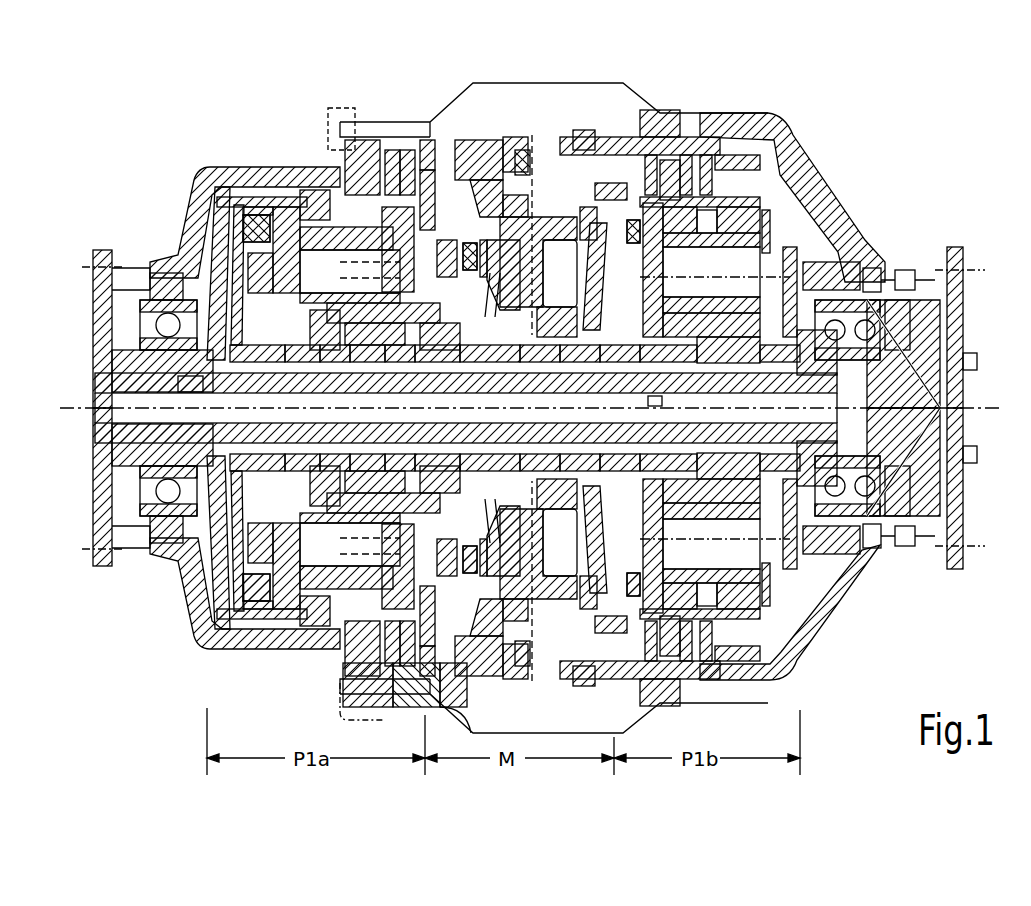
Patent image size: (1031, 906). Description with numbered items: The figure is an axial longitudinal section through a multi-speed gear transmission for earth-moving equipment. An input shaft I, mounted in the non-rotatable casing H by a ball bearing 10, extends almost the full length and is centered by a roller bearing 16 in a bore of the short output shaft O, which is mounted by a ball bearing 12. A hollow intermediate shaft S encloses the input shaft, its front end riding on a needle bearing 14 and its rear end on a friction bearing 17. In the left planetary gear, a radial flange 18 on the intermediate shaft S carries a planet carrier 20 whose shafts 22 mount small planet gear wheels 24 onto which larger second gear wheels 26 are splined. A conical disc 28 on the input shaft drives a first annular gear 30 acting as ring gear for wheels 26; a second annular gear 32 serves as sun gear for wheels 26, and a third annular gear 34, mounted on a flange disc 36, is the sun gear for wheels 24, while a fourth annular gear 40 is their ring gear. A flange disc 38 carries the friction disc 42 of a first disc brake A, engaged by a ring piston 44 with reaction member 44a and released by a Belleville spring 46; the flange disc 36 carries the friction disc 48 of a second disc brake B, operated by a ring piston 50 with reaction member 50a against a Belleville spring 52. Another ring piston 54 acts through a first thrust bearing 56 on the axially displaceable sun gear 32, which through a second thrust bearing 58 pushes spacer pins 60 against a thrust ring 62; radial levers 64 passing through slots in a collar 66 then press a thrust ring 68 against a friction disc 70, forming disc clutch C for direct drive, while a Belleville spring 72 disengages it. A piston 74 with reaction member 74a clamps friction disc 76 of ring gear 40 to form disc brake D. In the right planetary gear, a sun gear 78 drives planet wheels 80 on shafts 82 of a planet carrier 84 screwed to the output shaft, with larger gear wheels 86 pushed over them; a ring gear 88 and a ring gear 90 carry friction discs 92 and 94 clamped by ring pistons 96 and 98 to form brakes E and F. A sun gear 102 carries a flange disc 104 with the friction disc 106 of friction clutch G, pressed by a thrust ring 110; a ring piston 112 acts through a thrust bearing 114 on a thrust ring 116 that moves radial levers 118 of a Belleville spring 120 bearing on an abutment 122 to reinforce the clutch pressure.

The ball bearing 10 is at (140, 305).
The input shaft I is at (120, 372).
The ball bearing 12 is at (955, 341).
The needle bearing 14 is at (247, 368).
The roller bearing 16 is at (834, 378).
The friction bearing 17 is at (655, 406).
The radial flange 18 is at (270, 349).
The planet carrier 20 is at (288, 208).
The shaft 22 is at (340, 276).
The first planet gear wheel 24 is at (392, 318).
The second gear wheel 26 is at (340, 312).
The conical disc 28 is at (222, 231).
The first annular gear 30 is at (317, 190).
The second annular gear 32 is at (380, 352).
The third annular gear 34 is at (395, 352).
The flange disc 36 is at (486, 280).
The flange disc 38 is at (473, 173).
The fourth annular gear 40 is at (405, 244).
The friction disc 42 is at (433, 180).
The ring piston 44 is at (510, 167).
The reaction member 44a is at (437, 150).
The Belleville spring 46 is at (520, 207).
The friction disc 48 is at (478, 256).
The ring piston 50 is at (543, 177).
The reaction member 50a is at (417, 392).
The Belleville spring 52 is at (487, 284).
The ring piston 54 is at (512, 350).
The first thrust bearing 56 is at (442, 349).
The second thrust bearing 58 is at (345, 351).
The spacer pin 60 is at (318, 352).
The thrust ring 62 is at (197, 389).
The radial lever 64 is at (259, 273).
The collar 66 is at (235, 200).
The thrust ring 68 is at (258, 200).
The friction disc 70 is at (262, 215).
The Belleville spring 72 is at (245, 288).
The piston 74 is at (393, 167).
The reaction member 74a is at (333, 153).
The friction disc 76 is at (370, 150).
The sun gear 78 is at (740, 362).
The planet wheel 80 is at (788, 302).
The shaft 82 is at (742, 276).
The planet carrier 84 is at (648, 205).
The gear wheel 86 is at (702, 362).
The ring gear 88 is at (722, 150).
The ring gear 90 is at (800, 188).
The friction disc 92 is at (708, 150).
The friction disc 94 is at (783, 173).
The ring piston 96 is at (620, 150).
The ring piston 98 is at (820, 222).
The sun gear 102 is at (660, 350).
The flange disc 104 is at (672, 300).
The friction disc 106 is at (680, 233).
The thrust ring 110 is at (598, 235).
The ring piston 112 is at (552, 350).
The thrust bearing 114 is at (590, 350).
The thrust ring 116 is at (632, 350).
The radial lever 118 is at (633, 307).
The Belleville spring 120 is at (633, 243).
The abutment 122 is at (545, 130).
The first disc brake A is at (423, 163).
The second disc brake B is at (523, 187).
The disc clutch C is at (273, 183).
The disc brake D is at (388, 150).
The one-disc brake E is at (683, 150).
The one-disc brake F is at (745, 142).
The friction clutch G is at (653, 155).
The casing H is at (812, 648).
The output shaft O is at (962, 388).
The intermediate shaft S is at (880, 283).